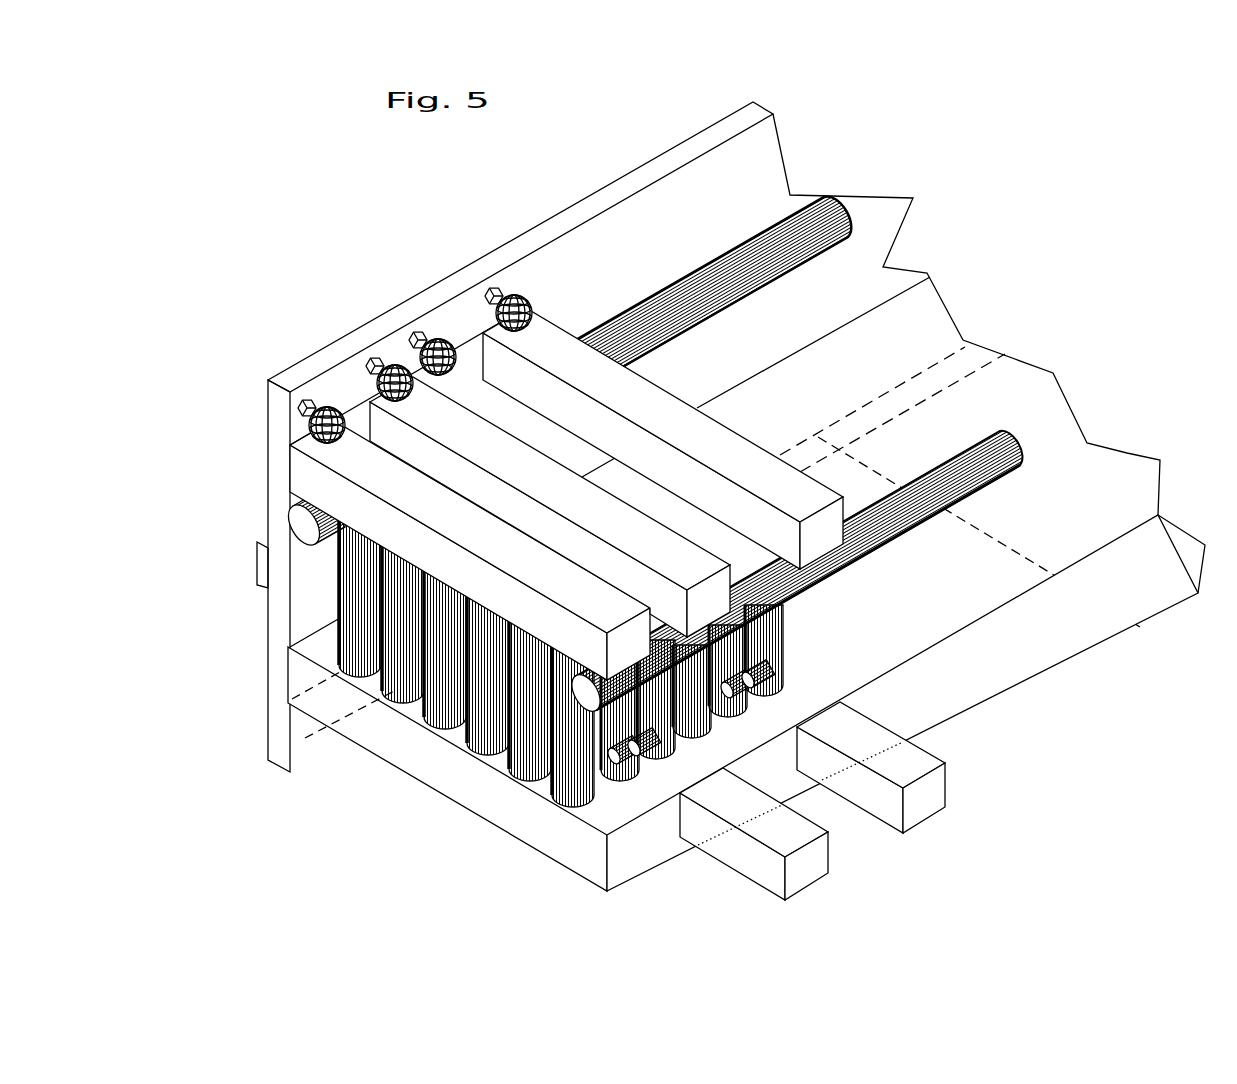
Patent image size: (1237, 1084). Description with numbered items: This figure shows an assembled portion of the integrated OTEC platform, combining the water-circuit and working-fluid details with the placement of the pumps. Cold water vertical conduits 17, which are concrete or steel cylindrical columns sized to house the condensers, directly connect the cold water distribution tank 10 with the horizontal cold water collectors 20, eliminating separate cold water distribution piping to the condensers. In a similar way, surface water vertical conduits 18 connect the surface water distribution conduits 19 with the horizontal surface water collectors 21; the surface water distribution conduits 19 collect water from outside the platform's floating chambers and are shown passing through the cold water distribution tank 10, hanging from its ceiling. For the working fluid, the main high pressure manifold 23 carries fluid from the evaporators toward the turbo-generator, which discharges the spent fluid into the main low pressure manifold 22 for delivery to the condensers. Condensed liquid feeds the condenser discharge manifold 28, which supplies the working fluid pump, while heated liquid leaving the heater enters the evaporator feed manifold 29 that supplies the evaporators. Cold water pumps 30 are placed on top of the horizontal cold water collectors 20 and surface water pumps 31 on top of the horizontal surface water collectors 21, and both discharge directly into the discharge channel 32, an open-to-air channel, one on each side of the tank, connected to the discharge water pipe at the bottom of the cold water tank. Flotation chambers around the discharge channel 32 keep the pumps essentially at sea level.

The cold water distribution tank 10 is at (947, 597).
The cold water vertical conduits 17 is at (487, 727).
The surface water vertical conduits 18 is at (777, 673).
The surface water distribution conduits 19 is at (257, 563).
The horizontal cold water collectors 20 is at (408, 495).
The horizontal surface water collectors 21 is at (517, 470).
The main low pressure manifold 22 is at (850, 198).
The main high pressure manifold 23 is at (1008, 427).
The condenser discharge manifold 28 is at (613, 765).
The evaporator feed manifold 29 is at (634, 755).
The cold water pumps 30 is at (330, 403).
The surface water pumps 31 is at (402, 365).
The discharge channel 32 is at (722, 190).